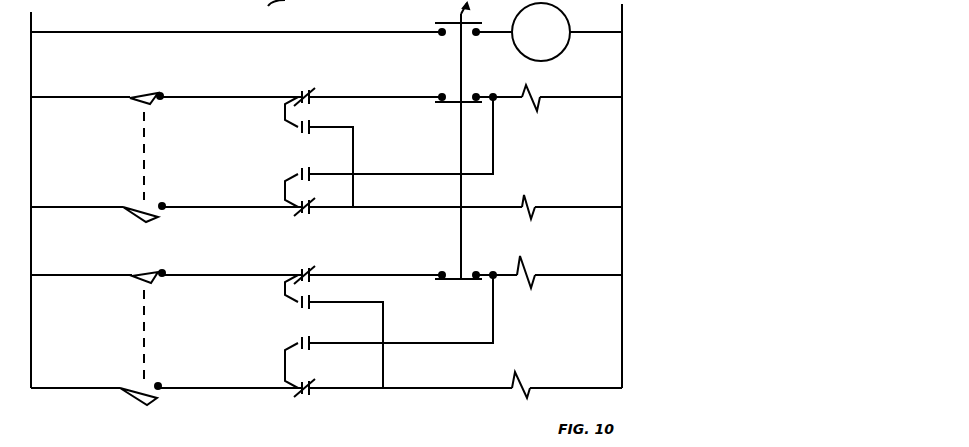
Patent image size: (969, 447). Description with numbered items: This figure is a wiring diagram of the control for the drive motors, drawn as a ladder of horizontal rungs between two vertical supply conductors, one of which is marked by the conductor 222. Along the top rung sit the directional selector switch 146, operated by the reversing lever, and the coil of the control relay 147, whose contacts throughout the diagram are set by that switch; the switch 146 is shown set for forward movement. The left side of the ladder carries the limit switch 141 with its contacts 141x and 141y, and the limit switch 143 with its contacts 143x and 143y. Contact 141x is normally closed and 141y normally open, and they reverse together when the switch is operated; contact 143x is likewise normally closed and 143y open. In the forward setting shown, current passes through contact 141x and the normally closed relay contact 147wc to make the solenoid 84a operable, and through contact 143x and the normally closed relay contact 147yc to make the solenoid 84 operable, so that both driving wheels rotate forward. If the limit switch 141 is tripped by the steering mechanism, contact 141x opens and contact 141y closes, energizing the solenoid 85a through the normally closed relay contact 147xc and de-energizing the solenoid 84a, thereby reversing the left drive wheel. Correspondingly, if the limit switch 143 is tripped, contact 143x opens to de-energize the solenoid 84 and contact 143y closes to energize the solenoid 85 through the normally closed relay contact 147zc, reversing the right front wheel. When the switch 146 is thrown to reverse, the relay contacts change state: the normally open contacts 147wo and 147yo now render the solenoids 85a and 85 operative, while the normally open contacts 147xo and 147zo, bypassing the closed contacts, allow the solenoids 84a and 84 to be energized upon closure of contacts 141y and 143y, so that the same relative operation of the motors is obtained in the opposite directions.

The conductor 222 is at (285, 2).
The directional selector switch 146 is at (451, 141).
The control relay 147 is at (568, 16).
The normally closed relay contact 147wc is at (313, 91).
The normally open relay contact 147wo is at (298, 135).
The normally open relay contact 147xo is at (298, 170).
The normally closed relay contact 147xc is at (300, 215).
The normally closed relay contact 147yc is at (306, 268).
The normally open relay contact 147yo is at (300, 309).
The normally open relay contact 147zo is at (298, 341).
The normally closed relay contact 147zc is at (312, 395).
The solenoid 84a is at (537, 111).
The solenoid 85a is at (525, 197).
The solenoid 84 is at (531, 288).
The solenoid 85 is at (518, 380).
The limit switch 141 is at (144, 147).
The switch contact 141x is at (137, 104).
The switch contact 141y is at (135, 218).
The limit switch 143 is at (144, 327).
The switch contact 143x is at (137, 283).
The switch contact 143y is at (136, 398).